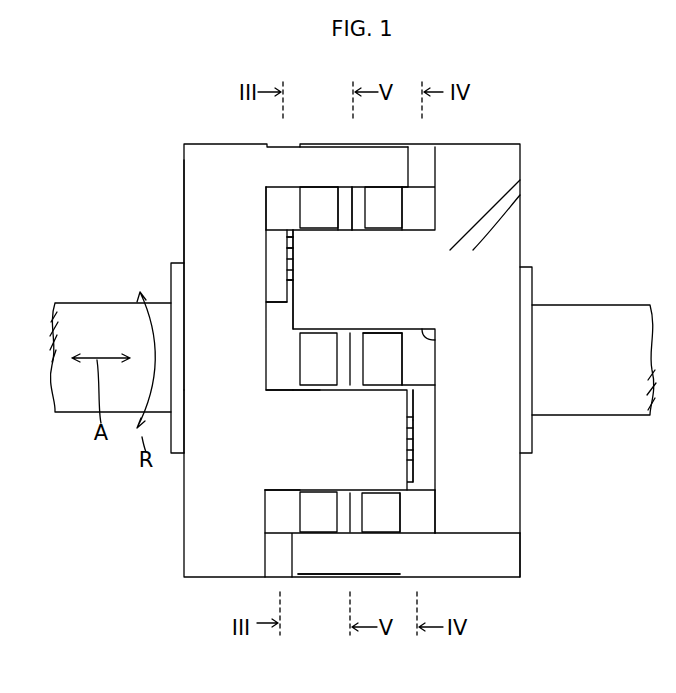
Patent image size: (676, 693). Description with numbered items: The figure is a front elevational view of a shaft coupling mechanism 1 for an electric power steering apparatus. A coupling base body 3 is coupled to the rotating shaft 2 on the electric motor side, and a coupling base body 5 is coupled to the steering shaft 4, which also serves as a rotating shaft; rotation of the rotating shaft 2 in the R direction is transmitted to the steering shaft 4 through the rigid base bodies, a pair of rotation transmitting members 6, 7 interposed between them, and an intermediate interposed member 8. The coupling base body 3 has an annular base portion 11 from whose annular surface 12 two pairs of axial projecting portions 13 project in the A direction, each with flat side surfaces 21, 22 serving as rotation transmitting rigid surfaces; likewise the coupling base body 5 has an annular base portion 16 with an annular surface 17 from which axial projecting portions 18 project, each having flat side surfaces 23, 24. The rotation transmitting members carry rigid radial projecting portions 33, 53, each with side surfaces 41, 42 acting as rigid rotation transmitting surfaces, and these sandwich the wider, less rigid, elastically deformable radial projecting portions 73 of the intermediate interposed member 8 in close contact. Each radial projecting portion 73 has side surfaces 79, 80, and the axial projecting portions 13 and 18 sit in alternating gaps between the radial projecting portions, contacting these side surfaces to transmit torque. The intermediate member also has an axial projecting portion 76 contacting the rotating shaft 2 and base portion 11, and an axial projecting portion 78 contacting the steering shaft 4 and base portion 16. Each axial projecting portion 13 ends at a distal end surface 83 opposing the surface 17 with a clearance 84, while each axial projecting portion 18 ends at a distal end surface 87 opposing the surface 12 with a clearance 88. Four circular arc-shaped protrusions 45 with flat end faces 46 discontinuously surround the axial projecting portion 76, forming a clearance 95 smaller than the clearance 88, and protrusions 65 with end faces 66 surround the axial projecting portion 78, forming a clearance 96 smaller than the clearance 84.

The shaft coupling mechanism 1 is at (545, 157).
The rotating shaft 2 is at (80, 312).
The coupling base body 3 is at (174, 541).
The steering shaft 4 is at (620, 403).
The coupling base body 5 is at (531, 531).
The rotation transmitting member 6 is at (285, 518).
The rotation transmitting member 7 is at (418, 206).
The intermediate interposed member 8 is at (346, 587).
The annular base portion 11 is at (197, 178).
The annular surface 12 is at (290, 233).
The axial projecting portion 13 is at (320, 160).
The annular base portion 16 is at (498, 557).
The annular surface 17 is at (440, 533).
The axial projecting portion 18 is at (290, 268).
The flat side surface 21 is at (300, 365).
The flat side surface 22 is at (325, 540).
The flat side surface 23 is at (348, 223).
The flat side surface 24 is at (387, 370).
The radial projecting portion 33 is at (313, 200).
The side surface 41 is at (305, 392).
The side surface 42 is at (313, 357).
The circular arc-shaped protrusion 45 is at (286, 240).
The end face 46 is at (288, 252).
The radial projecting portion 53 is at (385, 196).
The circular arc-shaped protrusion 65 is at (426, 332).
The end face 66 is at (430, 389).
The radial projecting portion 73 is at (353, 202).
The axial projecting portion 76 is at (268, 382).
The axial projecting portion 78 is at (417, 412).
The side surface 79 is at (420, 428).
The side surface 80 is at (422, 334).
The distal end surface 83 is at (420, 155).
The clearance 84 is at (440, 500).
The distal end surface 87 is at (202, 168).
The clearance 88 is at (295, 536).
The clearance 95 is at (277, 345).
The clearance 96 is at (425, 445).